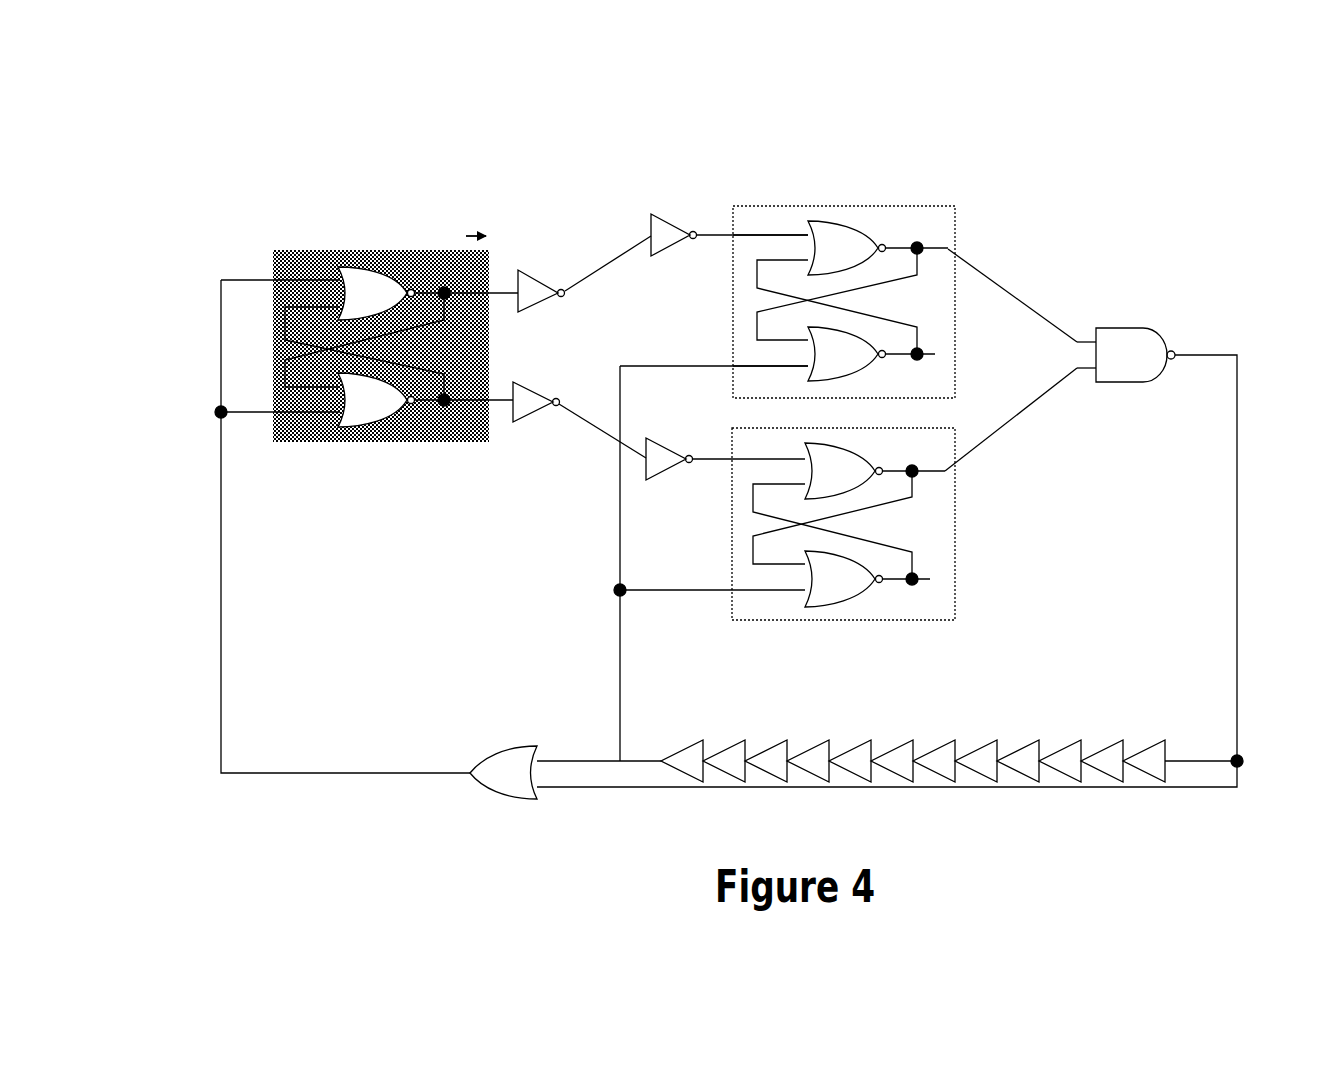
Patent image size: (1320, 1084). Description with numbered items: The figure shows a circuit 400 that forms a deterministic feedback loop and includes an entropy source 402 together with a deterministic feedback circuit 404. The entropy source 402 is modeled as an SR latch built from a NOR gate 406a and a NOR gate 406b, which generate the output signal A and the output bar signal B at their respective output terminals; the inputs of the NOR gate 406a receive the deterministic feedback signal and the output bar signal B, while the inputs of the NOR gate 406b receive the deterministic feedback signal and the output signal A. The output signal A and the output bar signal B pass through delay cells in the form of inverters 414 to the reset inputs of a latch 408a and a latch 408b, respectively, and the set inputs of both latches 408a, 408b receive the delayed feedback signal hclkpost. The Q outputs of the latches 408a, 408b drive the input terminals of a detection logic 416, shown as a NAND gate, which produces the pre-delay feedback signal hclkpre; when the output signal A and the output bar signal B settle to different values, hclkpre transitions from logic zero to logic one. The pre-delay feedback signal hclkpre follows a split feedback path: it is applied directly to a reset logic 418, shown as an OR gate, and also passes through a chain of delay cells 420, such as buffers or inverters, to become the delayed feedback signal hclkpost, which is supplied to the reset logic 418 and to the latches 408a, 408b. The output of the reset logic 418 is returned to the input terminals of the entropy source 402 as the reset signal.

The circuit 400 is at (253, 170).
The entropy source 402 is at (349, 250).
The deterministic feedback circuit 404 is at (1165, 260).
The NOR gate 406a is at (372, 280).
The NOR gate 406b is at (362, 418).
The latch 408a is at (810, 207).
The latch 408b is at (900, 630).
The inverter 414 is at (663, 218).
The detection logic 416 is at (1140, 337).
The reset logic 418 is at (498, 788).
The delay cells 420 is at (1067, 750).